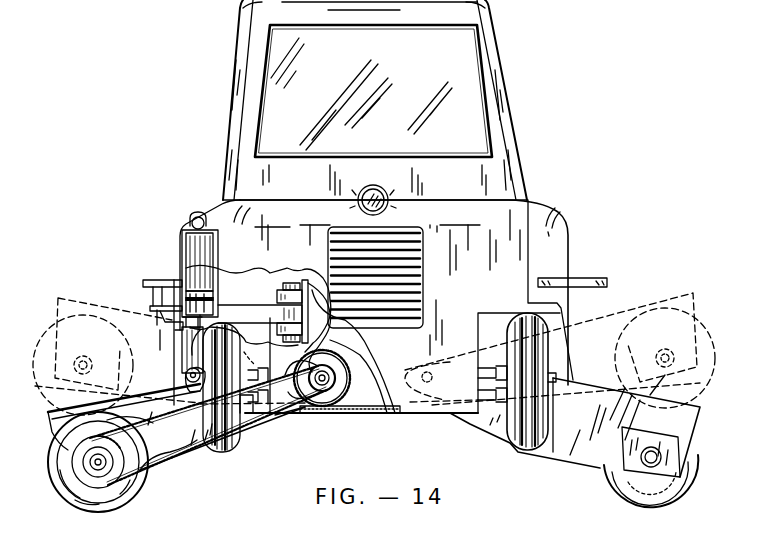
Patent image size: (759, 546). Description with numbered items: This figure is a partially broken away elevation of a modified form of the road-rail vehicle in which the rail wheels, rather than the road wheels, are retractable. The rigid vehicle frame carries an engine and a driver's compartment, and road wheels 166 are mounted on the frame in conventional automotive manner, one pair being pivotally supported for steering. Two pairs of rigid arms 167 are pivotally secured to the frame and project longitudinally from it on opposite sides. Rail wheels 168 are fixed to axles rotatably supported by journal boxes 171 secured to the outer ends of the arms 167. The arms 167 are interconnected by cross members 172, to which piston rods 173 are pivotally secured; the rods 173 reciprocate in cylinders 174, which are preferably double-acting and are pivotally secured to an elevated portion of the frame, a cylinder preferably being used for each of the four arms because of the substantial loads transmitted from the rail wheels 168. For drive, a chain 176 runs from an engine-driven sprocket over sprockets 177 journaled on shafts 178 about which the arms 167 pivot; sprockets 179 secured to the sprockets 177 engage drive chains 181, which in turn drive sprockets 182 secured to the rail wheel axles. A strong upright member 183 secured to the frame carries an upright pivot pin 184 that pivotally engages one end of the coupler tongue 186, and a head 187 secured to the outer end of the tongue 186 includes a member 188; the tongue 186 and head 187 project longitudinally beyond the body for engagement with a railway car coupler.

The road wheels 166 is at (523, 450).
The rigid arms 167 is at (588, 447).
The rail wheels 168 is at (668, 493).
The journal boxes 171 is at (677, 457).
The cross members 172 is at (191, 383).
The piston rods 173 is at (176, 393).
The cylinders 174 is at (190, 250).
The chain 176 is at (366, 412).
The sprockets 177 is at (328, 397).
The shafts 178 is at (333, 380).
The sprockets 179 is at (298, 410).
The drive chains 181 is at (147, 470).
The sprockets 182 is at (93, 470).
The upright member 183 is at (313, 300).
The pivot pin 184 is at (292, 287).
The coupler tongue 186 is at (265, 313).
The head 187 is at (144, 282).
The member 188 is at (172, 319).